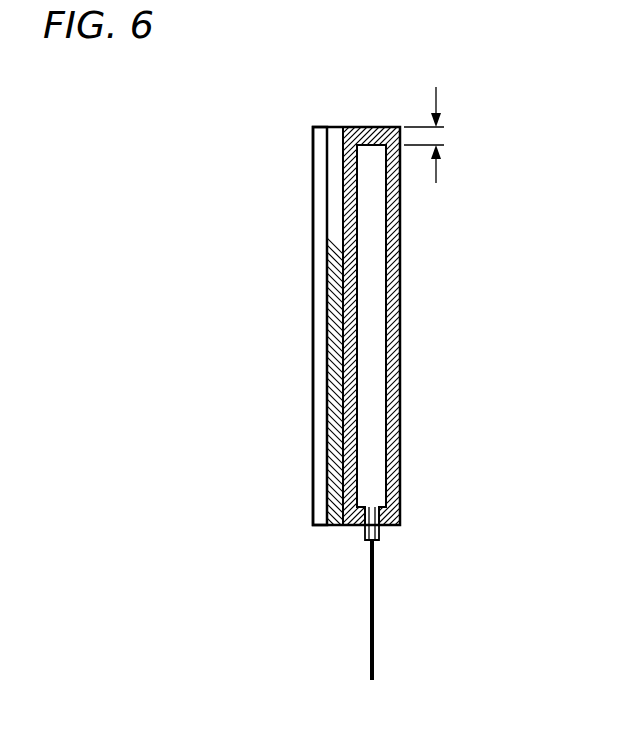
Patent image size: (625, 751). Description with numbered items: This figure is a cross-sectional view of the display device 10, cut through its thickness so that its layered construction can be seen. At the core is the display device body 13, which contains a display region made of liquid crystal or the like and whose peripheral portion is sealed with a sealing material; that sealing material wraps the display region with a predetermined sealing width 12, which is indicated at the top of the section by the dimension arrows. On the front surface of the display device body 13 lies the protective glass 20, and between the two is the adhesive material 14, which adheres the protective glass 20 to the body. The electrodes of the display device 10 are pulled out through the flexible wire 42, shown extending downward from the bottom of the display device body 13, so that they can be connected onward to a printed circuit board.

The display device 10 is at (284, 143).
The sealing width 12 is at (441, 134).
The display device body 13 is at (398, 353).
The adhesive material 14 is at (338, 375).
The protective glass 20 is at (318, 245).
The flexible wire 42 is at (375, 606).